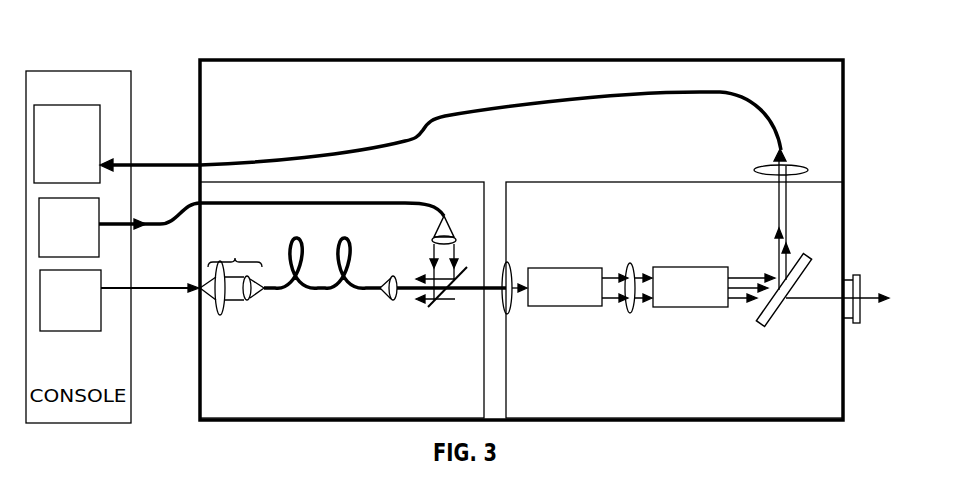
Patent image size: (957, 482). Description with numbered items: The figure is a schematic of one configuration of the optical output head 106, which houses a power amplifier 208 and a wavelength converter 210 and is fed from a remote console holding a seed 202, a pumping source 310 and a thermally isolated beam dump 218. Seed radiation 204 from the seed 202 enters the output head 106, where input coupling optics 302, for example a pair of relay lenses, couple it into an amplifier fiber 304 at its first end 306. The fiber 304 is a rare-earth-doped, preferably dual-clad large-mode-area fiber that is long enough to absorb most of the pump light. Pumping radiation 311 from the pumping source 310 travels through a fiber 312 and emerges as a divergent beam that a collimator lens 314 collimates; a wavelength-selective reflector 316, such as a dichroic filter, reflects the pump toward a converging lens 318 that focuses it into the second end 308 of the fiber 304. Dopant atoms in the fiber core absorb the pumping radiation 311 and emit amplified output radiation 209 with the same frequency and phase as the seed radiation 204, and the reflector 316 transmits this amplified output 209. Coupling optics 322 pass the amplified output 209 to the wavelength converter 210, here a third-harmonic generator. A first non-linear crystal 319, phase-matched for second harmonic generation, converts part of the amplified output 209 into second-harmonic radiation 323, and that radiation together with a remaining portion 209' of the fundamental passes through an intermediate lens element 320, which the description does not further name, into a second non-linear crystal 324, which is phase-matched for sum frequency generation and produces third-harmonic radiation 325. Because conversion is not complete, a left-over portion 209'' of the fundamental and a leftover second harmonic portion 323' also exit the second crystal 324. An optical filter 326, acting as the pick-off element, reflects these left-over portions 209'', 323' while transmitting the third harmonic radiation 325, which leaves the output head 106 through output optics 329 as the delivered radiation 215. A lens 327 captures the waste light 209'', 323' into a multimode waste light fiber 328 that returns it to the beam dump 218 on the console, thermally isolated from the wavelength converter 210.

The output head 106 is at (312, 58).
The beam dump 218 is at (67, 144).
The pumping source 310 is at (69, 227).
The seed 202 is at (70, 300).
The seed radiation 204 is at (162, 290).
The power amplifier 208 is at (455, 178).
The wavelength converter 210 is at (540, 180).
The input coupling optics 302 is at (236, 258).
The amplifier fiber 304 is at (295, 242).
The first end 306 is at (270, 293).
The second end 308 is at (370, 292).
The pumping radiation 311 is at (433, 256).
The fiber 312 is at (418, 203).
The collimator lens 314 is at (432, 237).
The wavelength-selective reflector 316 is at (431, 308).
The converging lens 318 is at (390, 300).
The amplified output radiation 209 is at (451, 314).
The coupling optics 322 is at (513, 267).
The first non-linear crystal 319 is at (563, 308).
The remaining portion of the amplified output radiation 209' is at (609, 270).
The second-harmonic radiation 323 is at (608, 321).
The relay lens 320 is at (633, 262).
The second non-linear crystal 324 is at (690, 309).
The third-harmonic radiation 325 is at (740, 309).
The leftover second harmonic radiation 323' is at (450, 190).
The left-over portion of the amplified output radiation 209'' is at (776, 219).
The optical filter 326 is at (764, 330).
The lens 327 is at (757, 172).
The waste light fiber 328 is at (766, 122).
The output optics 329 is at (857, 275).
The delivered radiation 215 is at (872, 301).